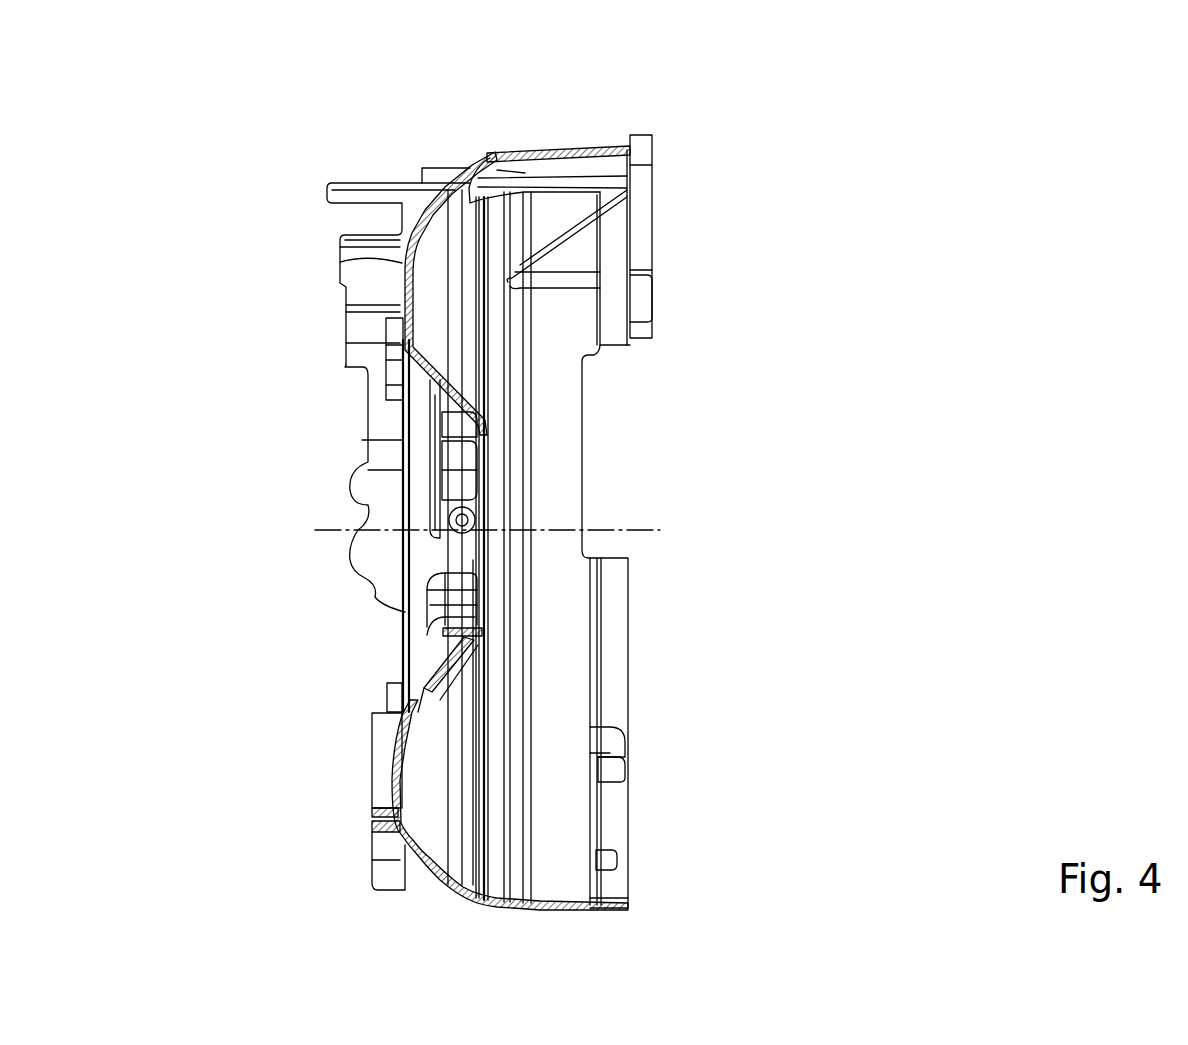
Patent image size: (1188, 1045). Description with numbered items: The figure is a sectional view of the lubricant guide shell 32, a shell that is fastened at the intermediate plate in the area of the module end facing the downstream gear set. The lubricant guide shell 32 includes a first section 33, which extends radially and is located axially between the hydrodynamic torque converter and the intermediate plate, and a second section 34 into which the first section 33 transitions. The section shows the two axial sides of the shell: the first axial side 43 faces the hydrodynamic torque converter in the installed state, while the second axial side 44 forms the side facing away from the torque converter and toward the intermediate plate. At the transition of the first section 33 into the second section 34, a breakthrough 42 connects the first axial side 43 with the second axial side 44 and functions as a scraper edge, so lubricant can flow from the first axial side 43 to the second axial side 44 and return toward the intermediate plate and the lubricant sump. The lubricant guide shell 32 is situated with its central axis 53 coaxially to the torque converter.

The lubricant guide shell 32 is at (310, 140).
The first section 33 is at (368, 257).
The second section 34 is at (560, 148).
The breakthrough 42 is at (504, 150).
The first axial side 43 is at (612, 402).
The second axial side 44 is at (322, 396).
The central axis 53 is at (645, 530).